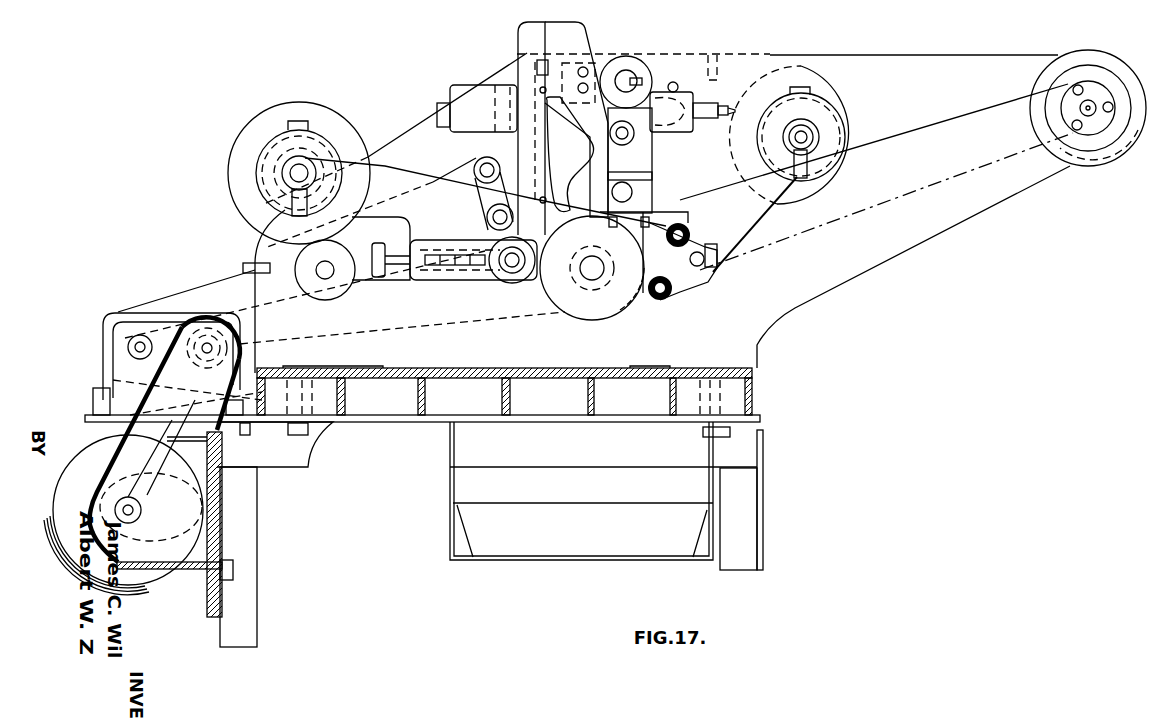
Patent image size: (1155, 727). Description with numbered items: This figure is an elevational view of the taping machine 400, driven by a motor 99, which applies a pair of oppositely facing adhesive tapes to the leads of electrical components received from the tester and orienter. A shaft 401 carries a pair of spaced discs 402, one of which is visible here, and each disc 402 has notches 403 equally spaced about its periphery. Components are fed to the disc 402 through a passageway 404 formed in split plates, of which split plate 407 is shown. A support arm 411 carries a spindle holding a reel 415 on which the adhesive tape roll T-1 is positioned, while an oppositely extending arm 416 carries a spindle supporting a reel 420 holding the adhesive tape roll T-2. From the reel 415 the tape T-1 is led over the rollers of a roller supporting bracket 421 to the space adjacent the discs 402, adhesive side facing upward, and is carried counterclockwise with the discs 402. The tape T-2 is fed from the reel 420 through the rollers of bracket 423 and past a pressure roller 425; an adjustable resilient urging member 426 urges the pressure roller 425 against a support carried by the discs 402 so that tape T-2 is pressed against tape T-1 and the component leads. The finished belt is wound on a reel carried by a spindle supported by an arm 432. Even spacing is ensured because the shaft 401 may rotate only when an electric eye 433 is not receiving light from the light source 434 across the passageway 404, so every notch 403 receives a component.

The taping machine 400 is at (905, 255).
The reel 420 is at (343, 127).
The arm 416 is at (389, 176).
The bracket 423 is at (506, 185).
The electric eye 433 is at (470, 103).
The light source 434 is at (662, 95).
The split plate 407 is at (530, 35).
The passageway 404 is at (587, 160).
The support arm 411 is at (745, 178).
The reel 415 is at (868, 118).
The arm 432 is at (998, 198).
The adhesive tape roll T-2 is at (343, 260).
The adjustable resilient urging member 426 is at (428, 277).
The pressure roller 425 is at (505, 284).
The disc 402 is at (585, 318).
The notch 403 is at (607, 312).
The shaft 401 is at (628, 298).
The bracket 421 is at (675, 303).
The adhesive tape roll T-1 is at (750, 227).
The motor 99 is at (150, 566).